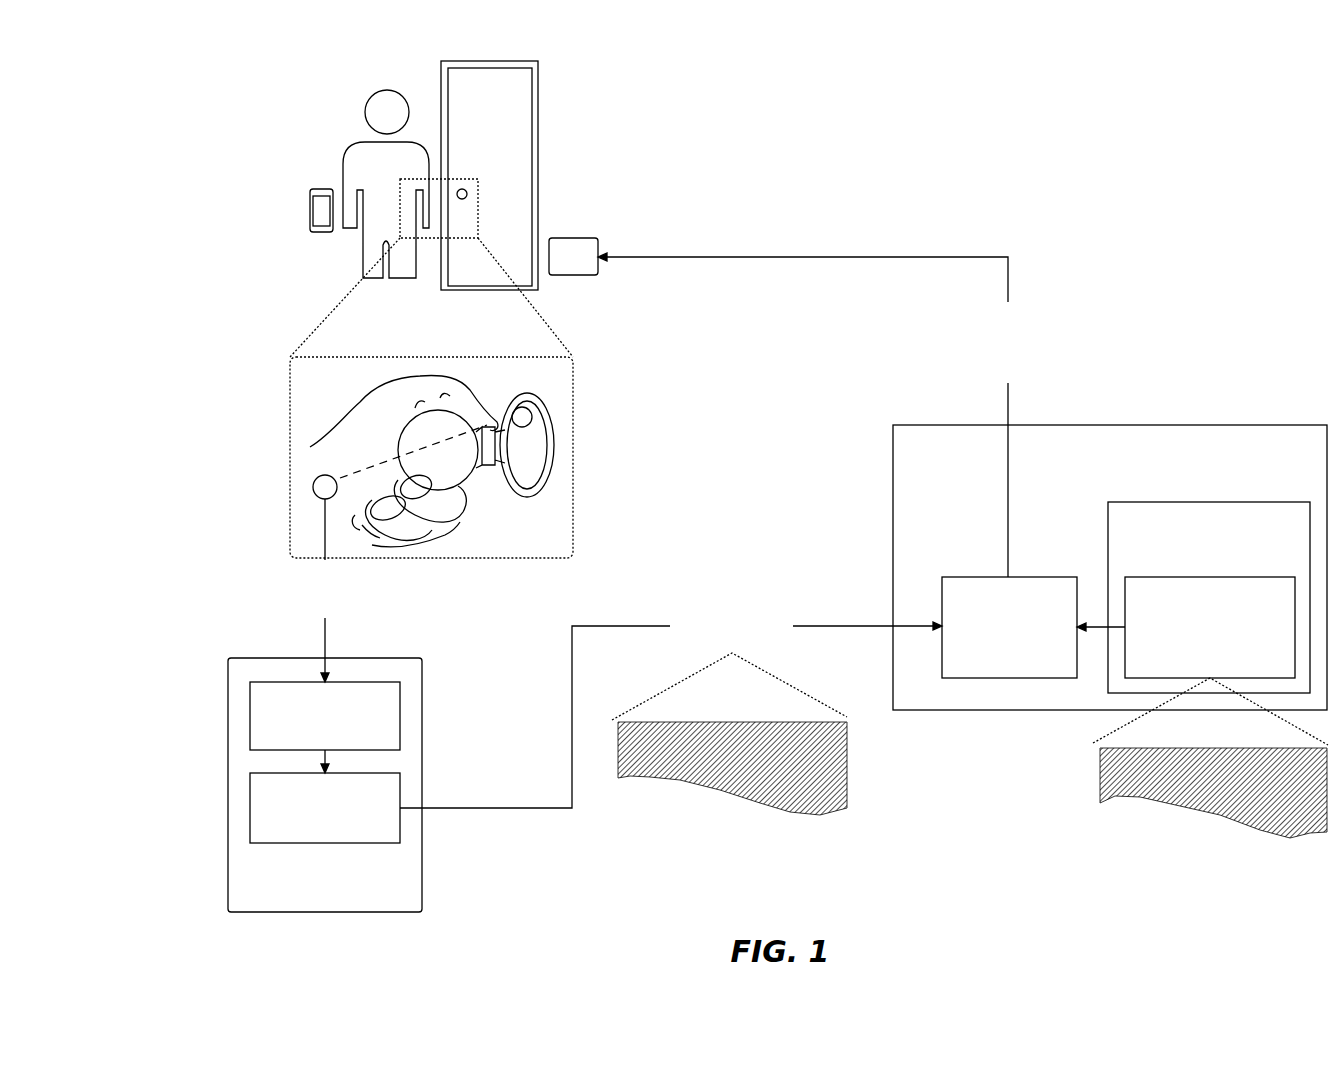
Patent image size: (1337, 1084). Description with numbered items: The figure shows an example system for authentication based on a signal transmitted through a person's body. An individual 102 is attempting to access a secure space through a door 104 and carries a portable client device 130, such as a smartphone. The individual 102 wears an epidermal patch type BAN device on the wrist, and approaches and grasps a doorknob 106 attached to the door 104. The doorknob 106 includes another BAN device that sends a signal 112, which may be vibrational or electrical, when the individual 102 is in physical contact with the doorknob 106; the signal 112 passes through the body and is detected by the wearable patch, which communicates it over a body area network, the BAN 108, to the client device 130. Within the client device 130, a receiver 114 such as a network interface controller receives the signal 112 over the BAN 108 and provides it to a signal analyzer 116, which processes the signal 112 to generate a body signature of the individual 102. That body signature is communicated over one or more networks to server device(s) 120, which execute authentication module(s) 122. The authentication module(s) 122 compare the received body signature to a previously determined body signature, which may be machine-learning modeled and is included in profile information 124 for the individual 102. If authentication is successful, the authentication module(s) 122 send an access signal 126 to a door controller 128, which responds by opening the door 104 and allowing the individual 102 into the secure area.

The individual 102 is at (382, 105).
The door 104 is at (523, 92).
The doorknob 106 is at (473, 470).
The BAN 108 is at (370, 470).
The signal 112 is at (325, 590).
The receiver 114 is at (325, 727).
The signal analyzer 116 is at (325, 808).
The server device(s) 120 is at (1110, 567).
The authentication module(s) 122 is at (1033, 627).
The profile information 124 is at (1209, 597).
The access signal 126 is at (817, 415).
The door controller 128 is at (588, 247).
The client device 130 is at (322, 190).